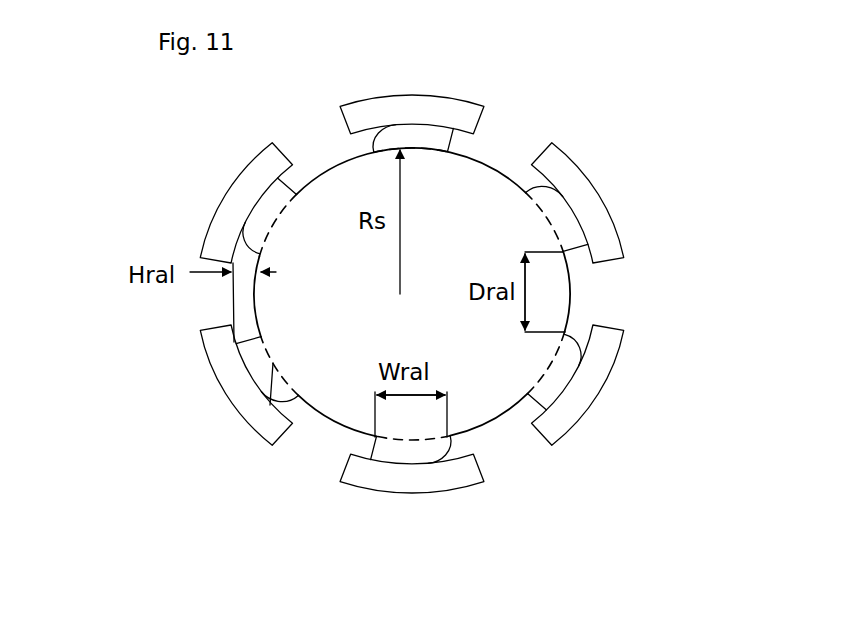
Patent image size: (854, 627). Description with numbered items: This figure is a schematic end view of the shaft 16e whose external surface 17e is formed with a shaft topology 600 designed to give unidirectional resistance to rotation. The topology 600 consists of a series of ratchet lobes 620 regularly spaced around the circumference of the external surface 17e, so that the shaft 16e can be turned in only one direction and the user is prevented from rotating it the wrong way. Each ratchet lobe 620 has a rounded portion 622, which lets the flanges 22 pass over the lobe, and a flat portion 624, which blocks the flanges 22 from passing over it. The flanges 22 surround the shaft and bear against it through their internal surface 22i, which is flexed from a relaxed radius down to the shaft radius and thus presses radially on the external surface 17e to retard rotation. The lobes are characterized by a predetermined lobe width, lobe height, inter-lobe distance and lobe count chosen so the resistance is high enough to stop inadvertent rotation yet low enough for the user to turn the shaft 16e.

The external surface 17e is at (492, 421).
The shaft 16e is at (358, 285).
The flanges 22 is at (412, 96).
The internal surface 22i is at (470, 131).
The shaft topology 600 is at (298, 181).
The ratchet lobes 620 is at (402, 438).
The rounded portion 622 is at (563, 334).
The flat portion 624 is at (563, 249).